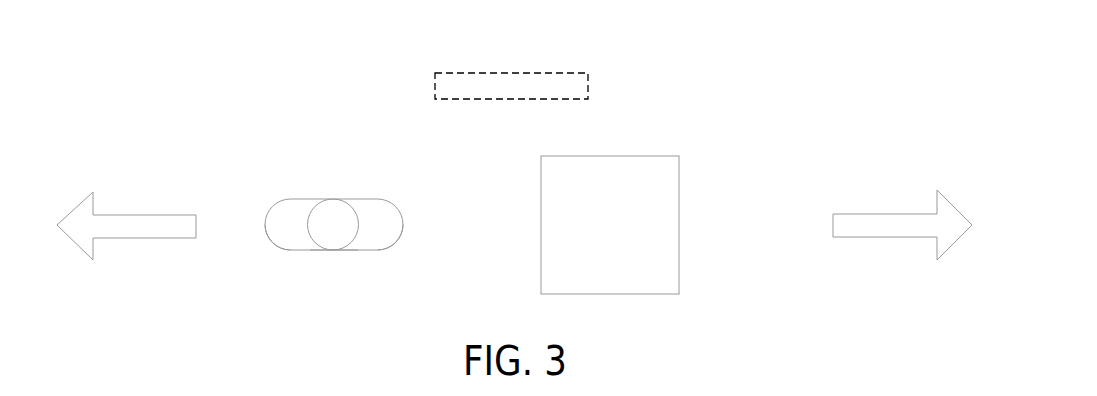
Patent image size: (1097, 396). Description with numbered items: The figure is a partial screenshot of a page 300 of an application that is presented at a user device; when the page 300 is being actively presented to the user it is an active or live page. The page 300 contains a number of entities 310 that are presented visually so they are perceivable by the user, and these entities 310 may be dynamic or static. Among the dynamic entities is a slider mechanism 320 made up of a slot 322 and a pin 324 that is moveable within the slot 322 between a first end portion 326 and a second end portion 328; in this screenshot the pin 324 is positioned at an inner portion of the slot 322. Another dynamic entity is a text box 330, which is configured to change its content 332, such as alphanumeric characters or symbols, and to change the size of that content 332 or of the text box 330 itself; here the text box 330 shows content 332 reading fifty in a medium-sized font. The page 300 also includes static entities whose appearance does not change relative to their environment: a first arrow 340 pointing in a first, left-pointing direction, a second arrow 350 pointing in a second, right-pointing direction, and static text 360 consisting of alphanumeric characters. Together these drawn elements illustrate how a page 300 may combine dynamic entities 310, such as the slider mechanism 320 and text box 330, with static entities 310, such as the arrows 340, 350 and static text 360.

The page 300 is at (197, 108).
The entity 310 is at (587, 98).
The slider mechanism 320 is at (366, 199).
The slot 322 is at (354, 254).
The pin 324 is at (334, 199).
The first end portion 326 is at (272, 237).
The second end portion 328 is at (395, 238).
The text box 330 is at (552, 155).
The content 332 is at (567, 259).
The first arrow 340 is at (156, 212).
The second arrow 350 is at (850, 212).
The static text 360 is at (451, 69).